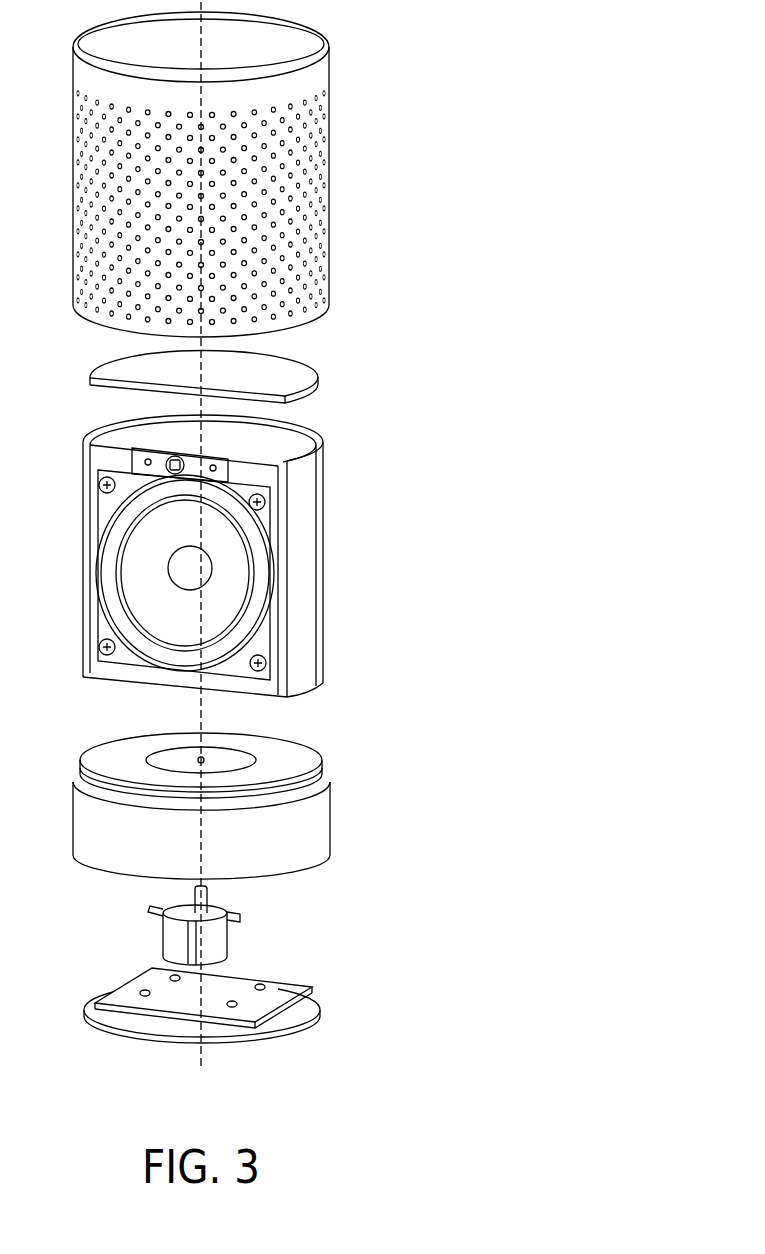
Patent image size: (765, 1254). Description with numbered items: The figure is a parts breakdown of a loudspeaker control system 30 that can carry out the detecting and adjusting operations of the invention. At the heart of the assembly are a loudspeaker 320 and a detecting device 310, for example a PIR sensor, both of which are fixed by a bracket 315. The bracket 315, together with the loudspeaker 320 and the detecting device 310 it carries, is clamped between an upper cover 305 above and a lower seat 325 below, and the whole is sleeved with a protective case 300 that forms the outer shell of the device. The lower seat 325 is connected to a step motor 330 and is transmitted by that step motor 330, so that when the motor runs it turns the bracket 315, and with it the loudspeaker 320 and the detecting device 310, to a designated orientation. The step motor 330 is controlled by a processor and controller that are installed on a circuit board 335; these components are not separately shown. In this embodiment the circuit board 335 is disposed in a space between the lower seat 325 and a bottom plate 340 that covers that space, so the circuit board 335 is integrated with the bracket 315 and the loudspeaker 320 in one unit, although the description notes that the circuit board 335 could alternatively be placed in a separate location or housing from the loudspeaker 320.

The loudspeaker control system 30 is at (543, 1010).
The protective case 300 is at (330, 193).
The upper cover 305 is at (297, 370).
The detecting device 310 is at (240, 464).
The bracket 315 is at (310, 524).
The loudspeaker 320 is at (255, 600).
The lower seat 325 is at (312, 759).
The step motor 330 is at (222, 930).
The circuit board 335 is at (288, 988).
The bottom plate 340 is at (306, 1010).